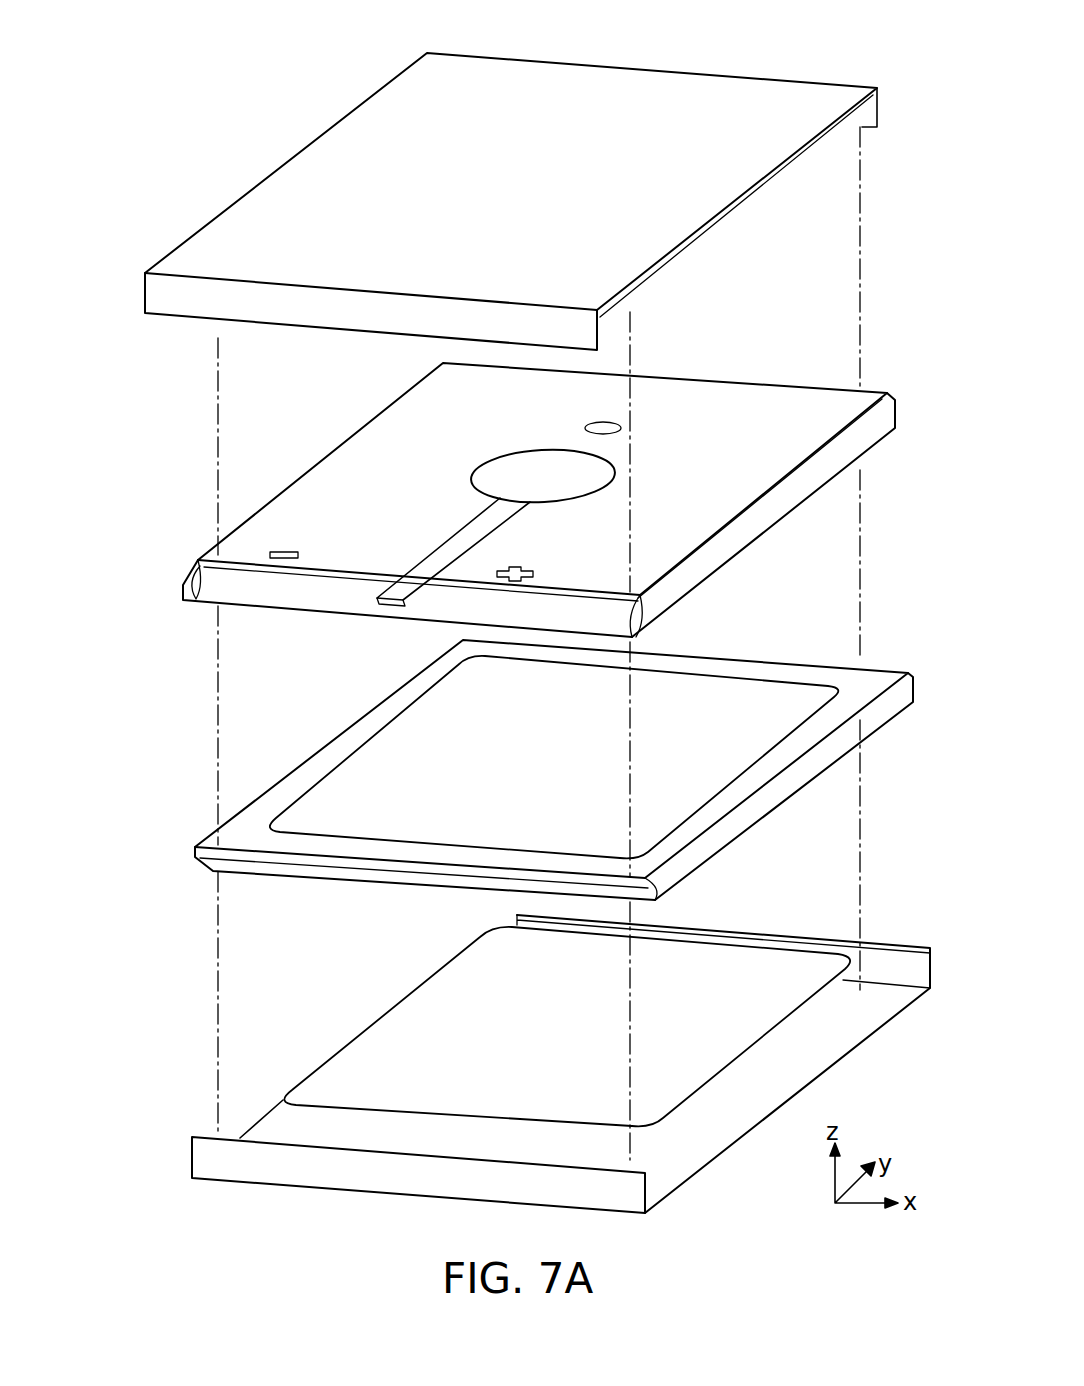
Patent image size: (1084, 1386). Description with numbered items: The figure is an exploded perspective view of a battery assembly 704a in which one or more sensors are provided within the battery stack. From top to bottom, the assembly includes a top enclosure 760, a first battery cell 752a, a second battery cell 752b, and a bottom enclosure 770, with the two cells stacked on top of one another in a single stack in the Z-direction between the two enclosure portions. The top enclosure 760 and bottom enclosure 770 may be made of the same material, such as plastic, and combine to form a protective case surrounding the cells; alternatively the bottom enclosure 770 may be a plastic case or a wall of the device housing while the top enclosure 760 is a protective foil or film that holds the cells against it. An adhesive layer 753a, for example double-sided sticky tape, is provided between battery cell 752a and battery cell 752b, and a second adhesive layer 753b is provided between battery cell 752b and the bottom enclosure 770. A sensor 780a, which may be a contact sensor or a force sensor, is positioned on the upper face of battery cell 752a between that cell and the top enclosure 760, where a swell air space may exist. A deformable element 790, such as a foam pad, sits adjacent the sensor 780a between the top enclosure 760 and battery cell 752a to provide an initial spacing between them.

The battery assembly 704a is at (193, 1212).
The top enclosure 760 is at (764, 78).
The battery cell 752a is at (897, 405).
The sensor 780a is at (500, 470).
The deformable element 790 is at (600, 421).
The battery cell 752b is at (912, 682).
The adhesive layer 753a is at (380, 736).
The bottom enclosure 770 is at (931, 975).
The adhesive layer 753b is at (410, 990).